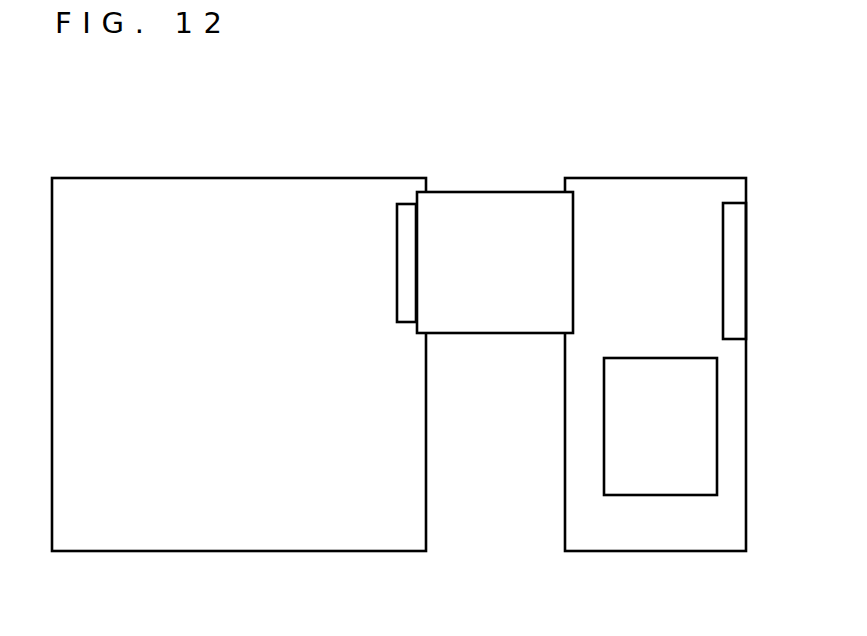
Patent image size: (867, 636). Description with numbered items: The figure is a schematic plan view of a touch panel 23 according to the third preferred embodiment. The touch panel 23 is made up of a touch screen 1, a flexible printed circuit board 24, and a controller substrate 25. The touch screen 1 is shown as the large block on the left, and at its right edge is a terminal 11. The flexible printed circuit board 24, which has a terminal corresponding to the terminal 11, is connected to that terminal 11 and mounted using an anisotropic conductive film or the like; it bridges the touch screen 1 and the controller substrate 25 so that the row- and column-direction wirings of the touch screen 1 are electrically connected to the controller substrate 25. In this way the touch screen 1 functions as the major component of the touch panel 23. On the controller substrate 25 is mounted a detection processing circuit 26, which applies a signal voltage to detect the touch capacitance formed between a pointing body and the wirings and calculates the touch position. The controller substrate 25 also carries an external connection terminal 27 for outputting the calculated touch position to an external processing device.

The touch panel 23 is at (314, 89).
The touch screen 1 is at (238, 552).
The terminal 11 is at (405, 202).
The flexible printed circuit board 24 is at (497, 334).
The controller substrate 25 is at (652, 178).
The detection processing circuit 26 is at (660, 497).
The external connection terminal 27 is at (733, 340).